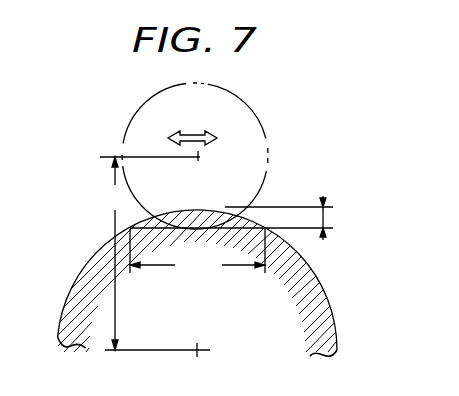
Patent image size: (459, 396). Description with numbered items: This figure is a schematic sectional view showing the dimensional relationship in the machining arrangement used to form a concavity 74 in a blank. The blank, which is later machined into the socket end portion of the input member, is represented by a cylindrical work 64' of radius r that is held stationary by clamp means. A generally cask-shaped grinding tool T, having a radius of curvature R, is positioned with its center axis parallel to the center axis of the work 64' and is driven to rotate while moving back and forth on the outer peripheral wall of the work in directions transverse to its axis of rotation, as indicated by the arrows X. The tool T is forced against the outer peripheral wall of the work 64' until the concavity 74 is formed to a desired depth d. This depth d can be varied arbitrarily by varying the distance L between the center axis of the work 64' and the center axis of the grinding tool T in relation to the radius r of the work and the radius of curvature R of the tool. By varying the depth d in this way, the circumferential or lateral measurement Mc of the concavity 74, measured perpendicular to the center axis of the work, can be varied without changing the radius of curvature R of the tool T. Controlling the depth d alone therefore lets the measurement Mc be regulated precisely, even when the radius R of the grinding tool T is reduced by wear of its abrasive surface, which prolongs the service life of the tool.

The cylindrical work 64' is at (182, 283).
The concavity 74 is at (145, 228).
The cask-shaped grinding tool T is at (262, 122).
The arrows X is at (193, 133).
The radius of curvature R is at (259, 191).
The distance L is at (155, 253).
The depth d is at (283, 218).
The circumferential or lateral measurement Mc is at (197, 252).
The radius r is at (316, 277).